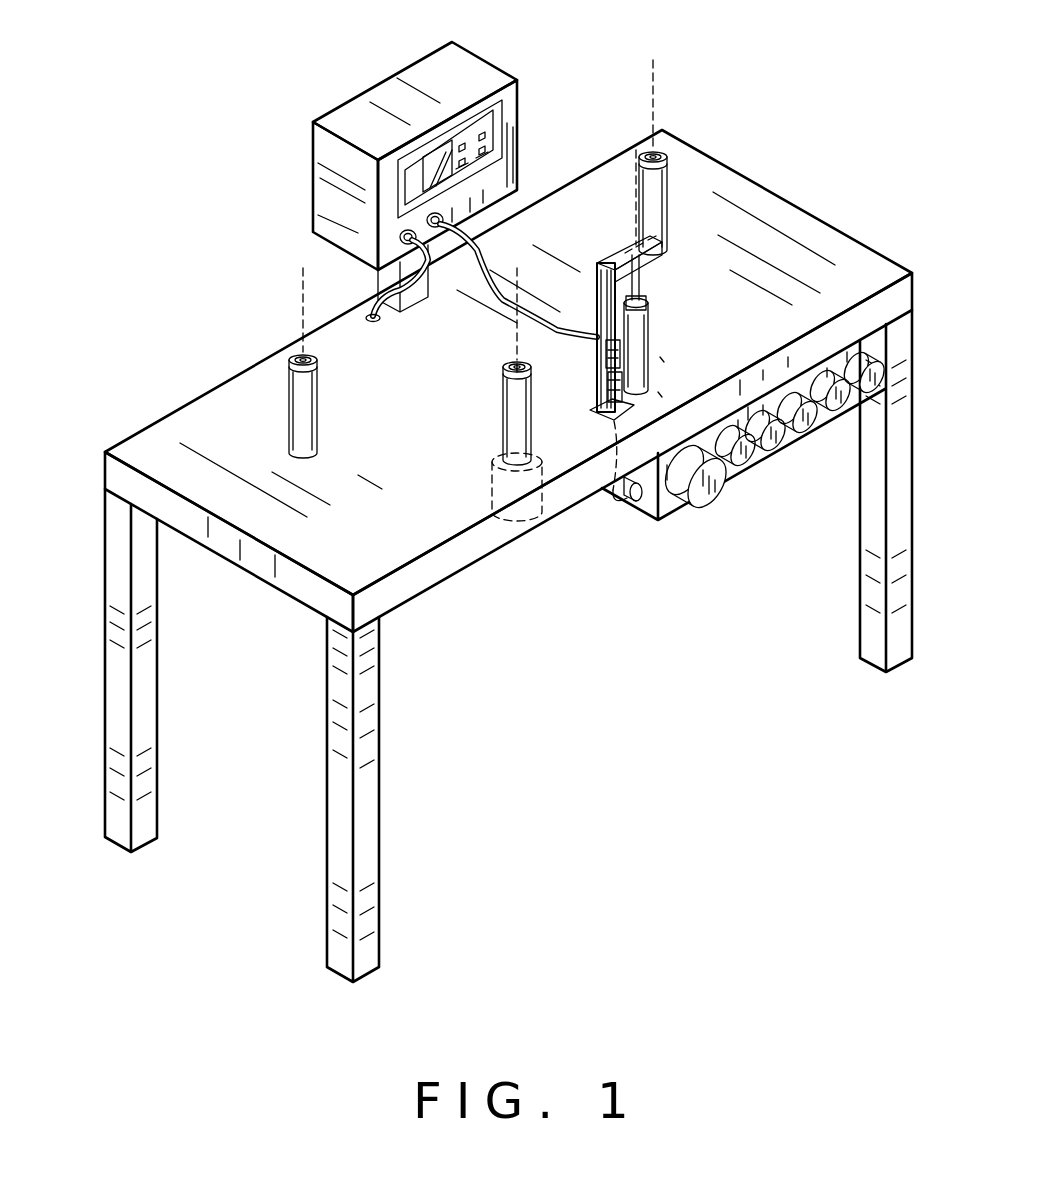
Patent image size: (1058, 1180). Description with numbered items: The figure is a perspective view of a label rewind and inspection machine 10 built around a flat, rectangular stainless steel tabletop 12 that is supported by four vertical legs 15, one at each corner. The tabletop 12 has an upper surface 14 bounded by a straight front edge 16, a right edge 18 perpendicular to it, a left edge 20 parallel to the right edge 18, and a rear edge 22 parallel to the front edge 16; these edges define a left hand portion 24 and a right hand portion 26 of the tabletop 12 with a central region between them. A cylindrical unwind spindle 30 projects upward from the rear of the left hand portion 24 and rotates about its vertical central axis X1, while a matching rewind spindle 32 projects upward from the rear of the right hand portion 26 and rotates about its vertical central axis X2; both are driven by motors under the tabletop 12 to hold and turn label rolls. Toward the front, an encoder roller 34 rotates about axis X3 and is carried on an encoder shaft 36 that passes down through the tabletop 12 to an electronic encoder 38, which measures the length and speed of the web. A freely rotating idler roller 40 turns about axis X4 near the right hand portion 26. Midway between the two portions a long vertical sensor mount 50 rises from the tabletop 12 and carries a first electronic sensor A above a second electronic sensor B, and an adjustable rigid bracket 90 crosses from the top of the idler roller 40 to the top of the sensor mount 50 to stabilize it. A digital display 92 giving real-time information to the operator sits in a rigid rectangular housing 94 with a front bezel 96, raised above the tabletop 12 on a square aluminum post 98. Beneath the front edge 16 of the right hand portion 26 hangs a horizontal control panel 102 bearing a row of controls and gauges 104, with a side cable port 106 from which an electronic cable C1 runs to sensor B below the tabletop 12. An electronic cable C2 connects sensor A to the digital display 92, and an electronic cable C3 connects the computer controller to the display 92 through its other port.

The label rewind machine 10 is at (153, 310).
The tabletop 12 is at (163, 458).
The upper surface 14 is at (232, 424).
The legs 15 is at (125, 752).
The front edge 16 is at (402, 590).
The right edge 18 is at (828, 220).
The left edge 20 is at (145, 478).
The rear edge 22 is at (634, 152).
The left hand portion 24 is at (203, 447).
The right hand portion 26 is at (776, 214).
The unwind spindle 30 is at (289, 408).
The rewind spindle 32 is at (667, 190).
The encoder roller 34 is at (503, 420).
The encoder shaft 36 is at (532, 365).
The electronic encoder 38 is at (527, 513).
The idler roller 40 is at (645, 298).
The sensor mount 50 is at (602, 425).
The adjustable rigid bracket 90 is at (771, 216).
The digital display 92 is at (462, 143).
The housing 94 is at (388, 108).
The front bezel 96 is at (510, 128).
The post 98 is at (376, 262).
The control panel 102 is at (794, 468).
The controls and gauges 104 is at (768, 470).
The cable port 106 is at (687, 505).
The first electronic sensor A is at (660, 360).
The second electronic sensor B is at (660, 395).
The electronic cable C1 is at (627, 505).
The electronic cable C2 is at (404, 230).
The electronic cable C3 is at (378, 291).
The vertical central axis X1 is at (298, 285).
The vertical central axis X2 is at (658, 72).
The vertical central axis X3 is at (522, 300).
The vertical central axis X4 is at (632, 177).